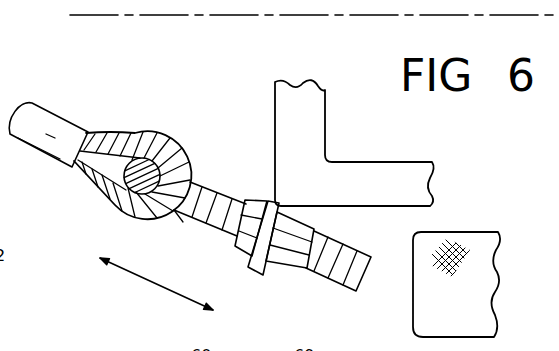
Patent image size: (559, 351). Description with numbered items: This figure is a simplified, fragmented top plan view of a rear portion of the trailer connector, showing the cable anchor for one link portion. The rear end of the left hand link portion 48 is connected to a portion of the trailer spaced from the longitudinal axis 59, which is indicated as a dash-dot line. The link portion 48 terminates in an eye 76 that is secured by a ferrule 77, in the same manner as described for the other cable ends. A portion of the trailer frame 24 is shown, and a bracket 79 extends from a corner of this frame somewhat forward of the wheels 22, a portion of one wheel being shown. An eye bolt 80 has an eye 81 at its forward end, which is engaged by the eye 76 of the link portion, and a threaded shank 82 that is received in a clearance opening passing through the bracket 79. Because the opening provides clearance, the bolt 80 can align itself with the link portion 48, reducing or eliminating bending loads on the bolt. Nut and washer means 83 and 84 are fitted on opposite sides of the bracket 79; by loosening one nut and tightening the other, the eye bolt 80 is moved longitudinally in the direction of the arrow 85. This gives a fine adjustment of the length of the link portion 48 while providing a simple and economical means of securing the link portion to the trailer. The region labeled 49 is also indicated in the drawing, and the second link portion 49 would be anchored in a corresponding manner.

The longitudinal axis 59 is at (167, 16).
The ferrule 77 is at (40, 130).
The eye 76 is at (115, 135).
The left hand link portion 48 is at (86, 195).
The eye 81 is at (122, 215).
The eye bolt 80 is at (181, 230).
The threaded shank 82 is at (195, 198).
The nut and washer means 83 is at (250, 238).
The bracket 79 is at (270, 250).
The nut and washer means 84 is at (313, 263).
The gap 49 is at (222, 163).
The arrow 85 is at (163, 288).
The trailer frame 24 is at (297, 135).
The wheels 22 is at (442, 308).